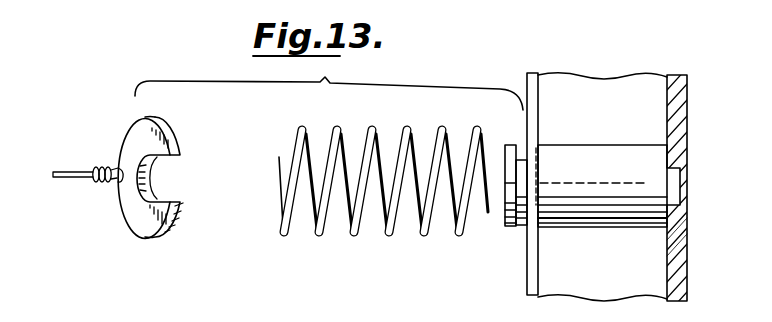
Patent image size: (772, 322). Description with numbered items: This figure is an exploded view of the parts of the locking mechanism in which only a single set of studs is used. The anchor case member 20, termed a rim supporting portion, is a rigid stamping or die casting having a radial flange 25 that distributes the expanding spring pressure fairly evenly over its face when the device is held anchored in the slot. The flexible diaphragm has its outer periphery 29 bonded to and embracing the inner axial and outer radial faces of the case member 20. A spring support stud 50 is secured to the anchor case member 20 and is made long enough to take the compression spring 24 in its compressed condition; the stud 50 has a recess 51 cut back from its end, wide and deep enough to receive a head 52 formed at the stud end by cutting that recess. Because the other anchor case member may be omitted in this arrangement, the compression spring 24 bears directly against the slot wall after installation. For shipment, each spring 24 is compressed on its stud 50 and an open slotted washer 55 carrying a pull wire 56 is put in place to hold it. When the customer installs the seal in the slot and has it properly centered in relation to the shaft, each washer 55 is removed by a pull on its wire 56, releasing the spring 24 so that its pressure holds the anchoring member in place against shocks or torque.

The anchor case member 20 is at (653, 117).
The compression spring 24 is at (353, 235).
The radial flange 25 is at (678, 268).
The outer periphery 29 is at (533, 73).
The stud 50 is at (613, 177).
The recess 51 is at (523, 148).
The head 52 is at (512, 227).
The open slotted washer 55 is at (138, 222).
The pull wire 56 is at (78, 178).